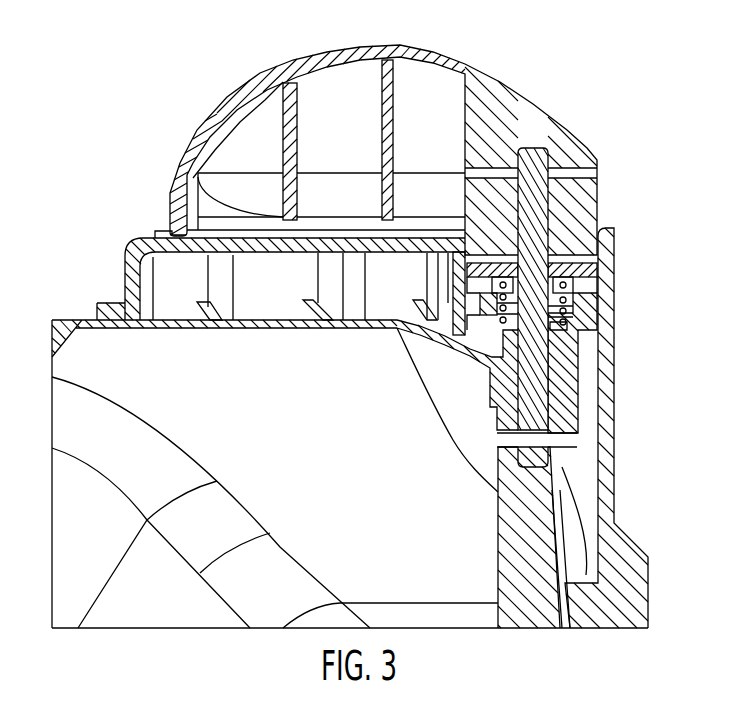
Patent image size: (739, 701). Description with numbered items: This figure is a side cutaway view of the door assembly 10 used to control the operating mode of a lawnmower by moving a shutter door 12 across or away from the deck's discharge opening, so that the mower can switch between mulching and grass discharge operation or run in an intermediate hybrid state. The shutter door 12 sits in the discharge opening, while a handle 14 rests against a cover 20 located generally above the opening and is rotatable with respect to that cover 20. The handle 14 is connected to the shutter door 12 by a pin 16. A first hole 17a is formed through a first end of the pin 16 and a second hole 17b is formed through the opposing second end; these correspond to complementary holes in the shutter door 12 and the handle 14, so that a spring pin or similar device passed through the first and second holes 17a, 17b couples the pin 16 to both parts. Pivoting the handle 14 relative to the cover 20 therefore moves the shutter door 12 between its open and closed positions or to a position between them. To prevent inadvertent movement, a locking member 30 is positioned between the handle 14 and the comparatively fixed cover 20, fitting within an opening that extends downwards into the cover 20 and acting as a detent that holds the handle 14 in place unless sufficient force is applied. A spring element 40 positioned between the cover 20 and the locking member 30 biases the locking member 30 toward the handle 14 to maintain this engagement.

The door assembly 10 is at (633, 60).
The shutter door 12 is at (532, 568).
The handle 14 is at (428, 46).
The pin 16 is at (540, 394).
The first hole 17a is at (556, 445).
The second hole 17b is at (585, 178).
The cover 20 is at (128, 255).
The locking member 30 is at (598, 266).
The spring element 40 is at (566, 301).